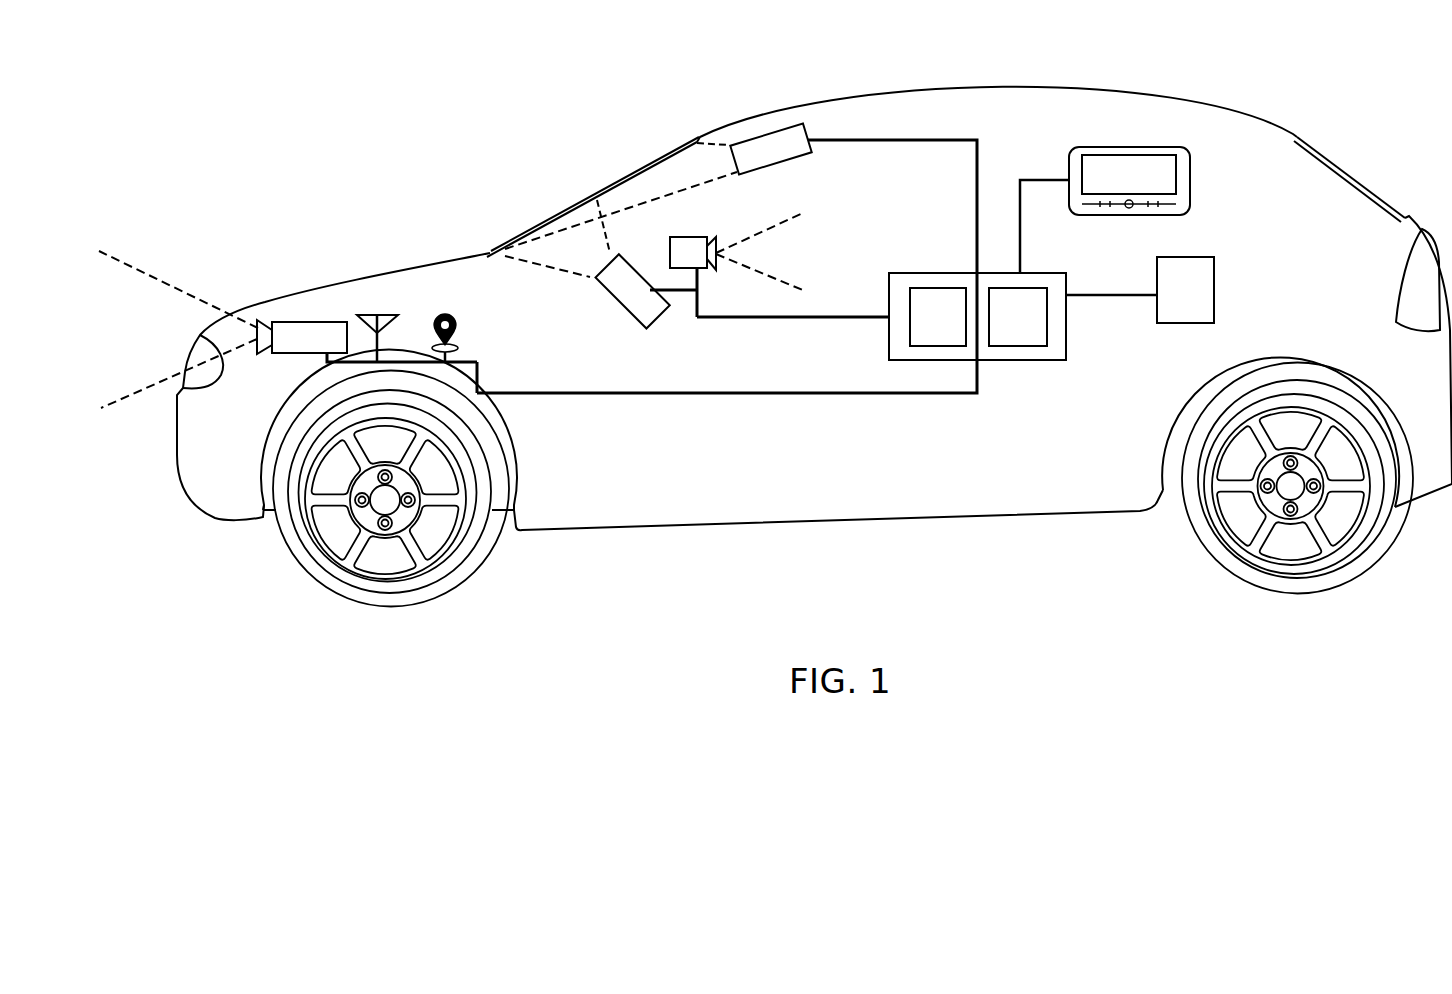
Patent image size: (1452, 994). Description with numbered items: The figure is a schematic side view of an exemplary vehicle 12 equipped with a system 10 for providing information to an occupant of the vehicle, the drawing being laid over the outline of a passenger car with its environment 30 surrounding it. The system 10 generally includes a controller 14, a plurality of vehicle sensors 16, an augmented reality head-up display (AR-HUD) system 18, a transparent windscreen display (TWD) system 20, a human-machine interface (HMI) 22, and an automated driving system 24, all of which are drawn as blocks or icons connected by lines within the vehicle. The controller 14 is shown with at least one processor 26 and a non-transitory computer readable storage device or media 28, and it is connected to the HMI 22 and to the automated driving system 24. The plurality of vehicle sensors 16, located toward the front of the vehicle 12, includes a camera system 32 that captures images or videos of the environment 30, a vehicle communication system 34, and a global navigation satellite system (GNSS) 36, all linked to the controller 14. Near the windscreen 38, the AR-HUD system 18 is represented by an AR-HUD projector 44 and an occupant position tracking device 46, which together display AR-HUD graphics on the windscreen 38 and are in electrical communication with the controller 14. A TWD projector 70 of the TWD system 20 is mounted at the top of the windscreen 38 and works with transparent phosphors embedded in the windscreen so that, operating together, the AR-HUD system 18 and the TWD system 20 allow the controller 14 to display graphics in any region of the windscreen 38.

The system for providing information to an occupant of a vehicle 10 is at (543, 193).
The vehicle 12 is at (1183, 98).
The controller 14 is at (1066, 360).
The plurality of vehicle sensors 16 is at (270, 373).
The augmented reality head-up display (AR-HUD) system 18 is at (679, 310).
The transparent windscreen display (TWD) system 20 is at (838, 131).
The human-machine interface (HMI) 22 is at (1190, 200).
The automated driving system 24 is at (1140, 290).
The processor 26 is at (938, 317).
The non-transitory computer readable storage device or media 28 is at (1018, 317).
The environment 30 is at (213, 260).
The camera system 32 is at (367, 341).
The vehicle communication system 34 is at (361, 315).
The global navigation satellite system (GNSS) 36 is at (445, 316).
The windscreen 38 is at (643, 170).
The AR-HUD projector 44 is at (613, 305).
The occupant position tracking device 46 is at (678, 236).
The TWD projector 70 is at (777, 167).